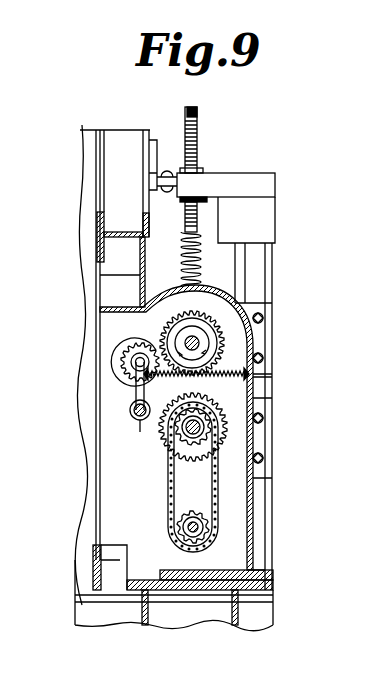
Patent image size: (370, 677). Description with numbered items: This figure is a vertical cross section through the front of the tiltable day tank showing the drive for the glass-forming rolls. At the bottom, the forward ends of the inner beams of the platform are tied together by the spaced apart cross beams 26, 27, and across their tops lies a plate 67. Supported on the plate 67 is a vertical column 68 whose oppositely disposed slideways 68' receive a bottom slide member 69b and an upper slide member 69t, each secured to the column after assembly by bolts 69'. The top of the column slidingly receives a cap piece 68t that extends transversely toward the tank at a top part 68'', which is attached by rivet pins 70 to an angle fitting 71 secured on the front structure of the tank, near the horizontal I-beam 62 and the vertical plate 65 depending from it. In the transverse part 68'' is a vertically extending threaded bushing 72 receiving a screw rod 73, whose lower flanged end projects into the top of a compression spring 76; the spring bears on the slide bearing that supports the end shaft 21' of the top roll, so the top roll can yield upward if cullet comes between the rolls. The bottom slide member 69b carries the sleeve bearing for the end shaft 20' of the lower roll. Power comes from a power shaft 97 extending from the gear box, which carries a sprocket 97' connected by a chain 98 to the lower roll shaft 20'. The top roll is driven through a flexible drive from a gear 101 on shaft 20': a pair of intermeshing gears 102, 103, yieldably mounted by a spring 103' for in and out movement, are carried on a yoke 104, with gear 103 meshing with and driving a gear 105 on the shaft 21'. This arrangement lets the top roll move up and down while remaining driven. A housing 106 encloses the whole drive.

The horizontally extending I-beam 62 is at (97, 233).
The housing 106 is at (100, 308).
The vertical plate 65 is at (128, 252).
The angle fitting 71 is at (150, 149).
The rivet pin 70 is at (163, 171).
The transversely extending top part 68'' is at (226, 173).
The cap piece 68t is at (276, 190).
The slideway 68' is at (245, 262).
The vertical column 68 is at (269, 416).
The bolt 69' is at (277, 307).
The upper slide member 69t is at (263, 338).
The bottom slide member 69b is at (262, 433).
The screw rod 73 is at (198, 121).
The threaded bushing 72 is at (200, 173).
The compression spring 76 is at (181, 257).
The end shaft of the top roll 21' is at (192, 343).
The gear 103 is at (100, 362).
The gear 105 is at (150, 339).
The yoke 104 is at (134, 390).
The gear 102 is at (138, 422).
The spring 103' is at (229, 369).
The gear 101 is at (160, 446).
The end shaft of the lower roll 20' is at (202, 415).
The chain 98 is at (170, 487).
The sprocket 97' is at (175, 527).
The power shaft 97 is at (172, 536).
The plate 67 is at (275, 584).
The cross beam 26 is at (142, 618).
The cross beam 27 is at (238, 618).